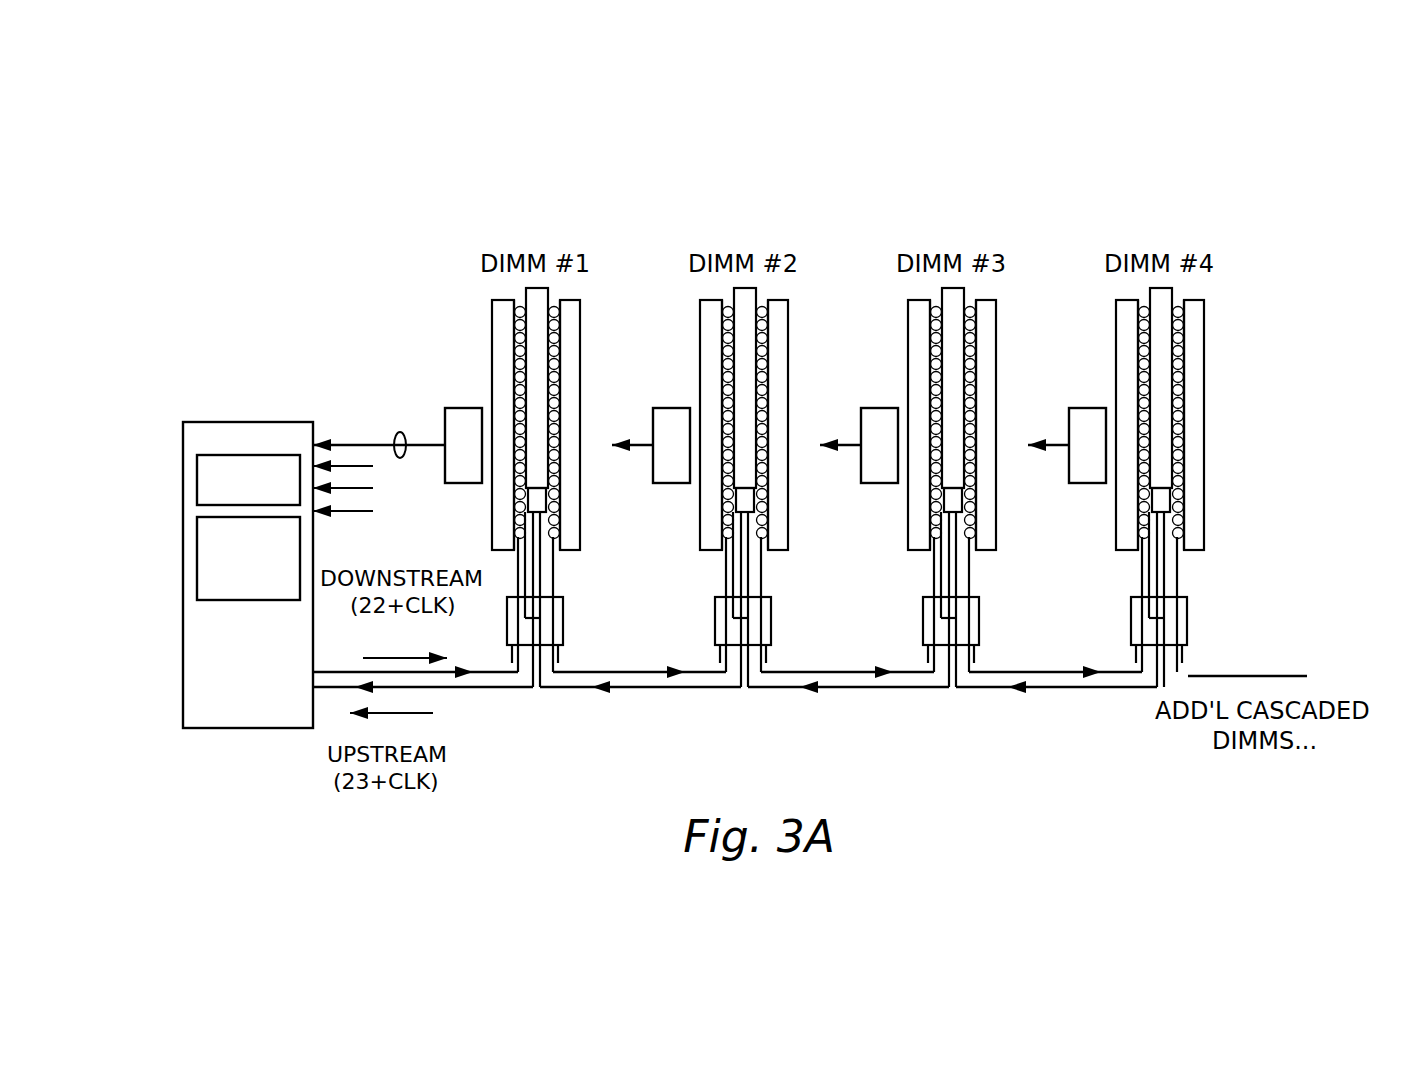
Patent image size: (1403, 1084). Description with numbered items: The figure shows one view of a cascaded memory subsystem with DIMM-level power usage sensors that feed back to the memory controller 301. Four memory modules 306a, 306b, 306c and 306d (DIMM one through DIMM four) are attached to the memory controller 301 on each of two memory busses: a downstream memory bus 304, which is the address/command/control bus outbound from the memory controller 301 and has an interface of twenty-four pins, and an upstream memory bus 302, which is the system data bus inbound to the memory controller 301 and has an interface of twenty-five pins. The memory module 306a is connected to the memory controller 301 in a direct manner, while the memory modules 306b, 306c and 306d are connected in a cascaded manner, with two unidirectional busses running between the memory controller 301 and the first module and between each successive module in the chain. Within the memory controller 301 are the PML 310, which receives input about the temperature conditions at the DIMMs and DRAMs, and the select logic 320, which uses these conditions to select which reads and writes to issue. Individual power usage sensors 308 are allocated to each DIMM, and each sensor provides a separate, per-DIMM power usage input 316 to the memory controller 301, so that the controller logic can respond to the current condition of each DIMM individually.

The memory controller 301 is at (277, 422).
The upstream memory bus 302 is at (506, 689).
The downstream memory bus 304 is at (440, 689).
The memory module 306a is at (580, 367).
The memory module 306b is at (788, 367).
The memory module 306c is at (996, 367).
The memory module 306d is at (1204, 385).
The power usage sensor 308 is at (463, 408).
The PML 310 is at (211, 455).
The power usage input 316 is at (394, 432).
The select logic 320 is at (197, 560).